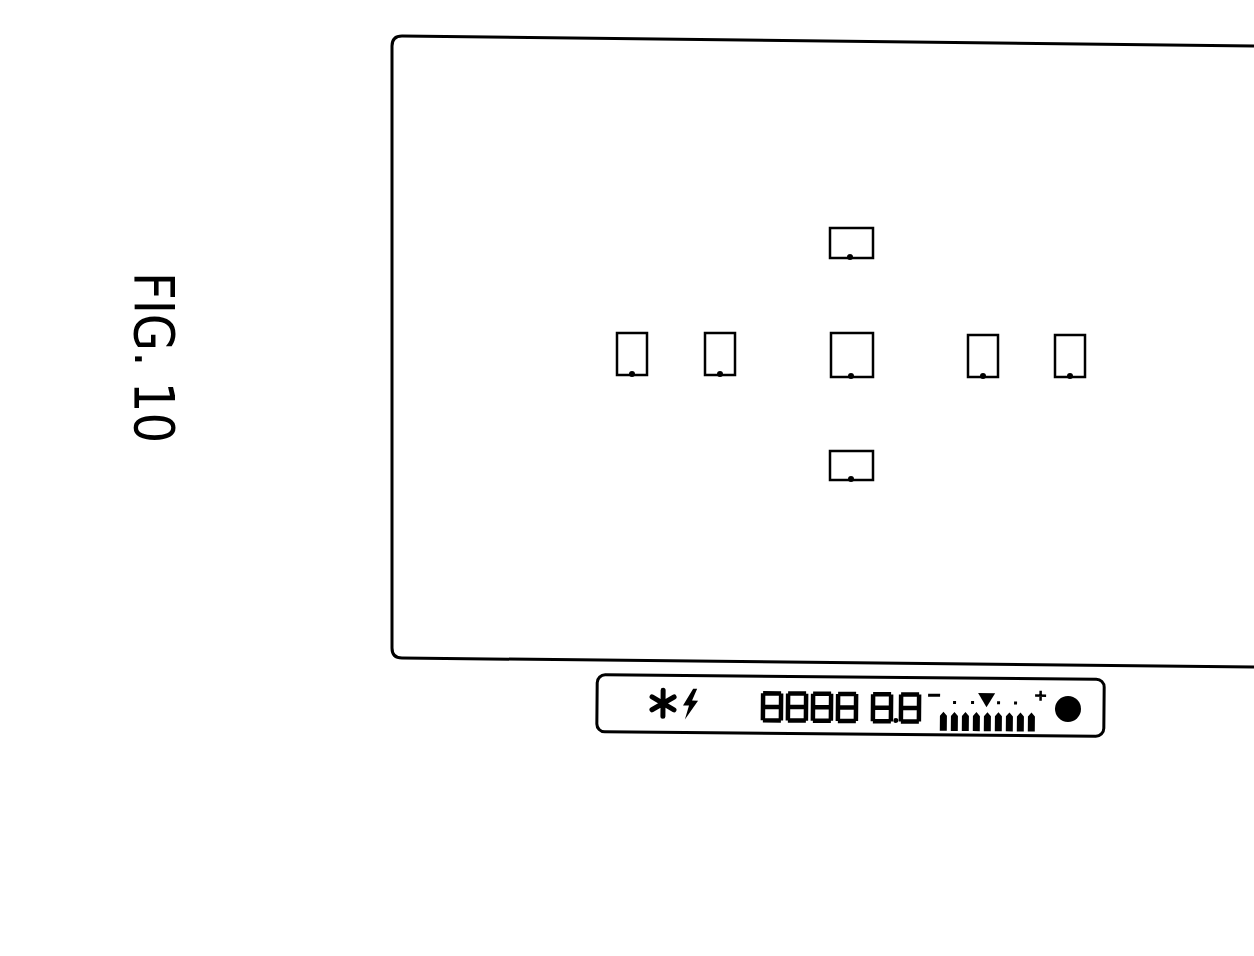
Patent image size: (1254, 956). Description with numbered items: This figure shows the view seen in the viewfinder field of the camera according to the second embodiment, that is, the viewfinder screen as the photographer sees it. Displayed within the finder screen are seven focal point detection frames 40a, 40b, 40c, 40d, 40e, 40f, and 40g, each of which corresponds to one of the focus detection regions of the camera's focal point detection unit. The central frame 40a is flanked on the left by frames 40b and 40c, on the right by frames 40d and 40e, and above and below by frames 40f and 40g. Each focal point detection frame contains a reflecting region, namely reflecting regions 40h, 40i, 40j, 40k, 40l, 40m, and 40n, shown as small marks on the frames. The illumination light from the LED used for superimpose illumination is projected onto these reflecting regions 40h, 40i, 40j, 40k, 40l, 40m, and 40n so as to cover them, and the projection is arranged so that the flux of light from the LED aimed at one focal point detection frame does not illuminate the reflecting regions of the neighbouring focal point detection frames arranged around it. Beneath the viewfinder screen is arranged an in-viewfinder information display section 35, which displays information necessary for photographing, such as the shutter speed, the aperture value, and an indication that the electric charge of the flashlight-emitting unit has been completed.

The in-viewfinder information display section 35 is at (915, 735).
The focal point detection frame 40a is at (850, 333).
The focal point detection frame 40b is at (723, 333).
The focal point detection frame 40c is at (633, 333).
The focal point detection frame 40d is at (985, 335).
The focal point detection frame 40e is at (1073, 335).
The focal point detection frame 40f is at (853, 228).
The focal point detection frame 40g is at (850, 451).
The reflecting region 40h is at (851, 377).
The reflecting region 40i is at (983, 377).
The reflecting region 40j is at (1070, 377).
The reflecting region 40k is at (720, 375).
The reflecting region 40l is at (632, 375).
The reflecting region 40m is at (850, 258).
The reflecting region 40n is at (851, 480).